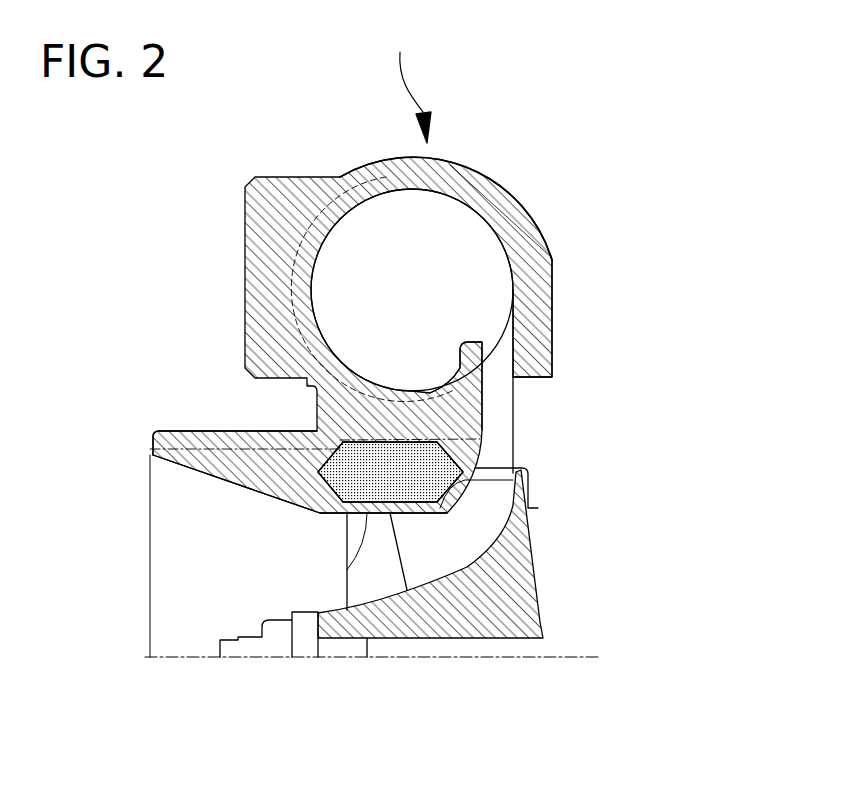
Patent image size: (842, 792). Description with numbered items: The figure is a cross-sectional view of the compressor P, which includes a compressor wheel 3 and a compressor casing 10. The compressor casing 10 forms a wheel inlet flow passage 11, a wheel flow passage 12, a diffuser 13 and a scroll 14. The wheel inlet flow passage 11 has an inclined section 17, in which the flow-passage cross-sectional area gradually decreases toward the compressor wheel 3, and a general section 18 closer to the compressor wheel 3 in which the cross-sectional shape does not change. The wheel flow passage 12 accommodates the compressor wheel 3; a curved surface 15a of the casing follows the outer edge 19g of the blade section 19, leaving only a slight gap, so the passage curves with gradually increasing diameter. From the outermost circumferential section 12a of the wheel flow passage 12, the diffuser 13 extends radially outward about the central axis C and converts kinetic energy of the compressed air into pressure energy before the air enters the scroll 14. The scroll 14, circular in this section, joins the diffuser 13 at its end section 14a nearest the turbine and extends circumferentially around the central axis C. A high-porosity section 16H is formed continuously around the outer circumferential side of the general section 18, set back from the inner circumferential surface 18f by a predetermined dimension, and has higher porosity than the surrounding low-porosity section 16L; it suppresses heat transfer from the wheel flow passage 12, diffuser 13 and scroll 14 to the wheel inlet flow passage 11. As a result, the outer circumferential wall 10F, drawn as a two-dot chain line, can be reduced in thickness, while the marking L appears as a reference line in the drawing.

The compressor wheel 3 is at (531, 577).
The compressor casing 10 is at (483, 173).
The outer circumferential wall 10F is at (290, 306).
The wheel inlet flow passage 11 is at (183, 503).
The wheel flow passage 12 is at (476, 538).
The outermost circumferential section 12a is at (496, 467).
The diffuser 13 is at (515, 397).
The scroll 14 is at (370, 223).
The end section 14a is at (515, 303).
The curved surface 15a is at (513, 480).
The high-porosity section 16H is at (410, 441).
The low-porosity section 16L is at (355, 390).
The inclined section 17 is at (237, 487).
The general section 18 is at (333, 513).
The inner circumferential surface 18f is at (347, 568).
The blade section 19 is at (433, 562).
The outer edge 19g is at (531, 472).
The compressor P is at (412, 75).
The central axis C is at (568, 657).
The reference level line L is at (315, 444).